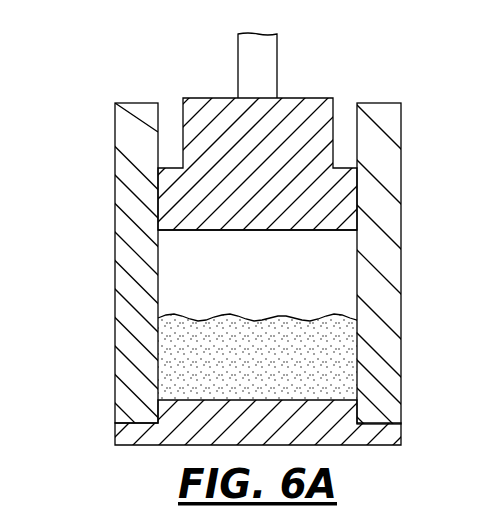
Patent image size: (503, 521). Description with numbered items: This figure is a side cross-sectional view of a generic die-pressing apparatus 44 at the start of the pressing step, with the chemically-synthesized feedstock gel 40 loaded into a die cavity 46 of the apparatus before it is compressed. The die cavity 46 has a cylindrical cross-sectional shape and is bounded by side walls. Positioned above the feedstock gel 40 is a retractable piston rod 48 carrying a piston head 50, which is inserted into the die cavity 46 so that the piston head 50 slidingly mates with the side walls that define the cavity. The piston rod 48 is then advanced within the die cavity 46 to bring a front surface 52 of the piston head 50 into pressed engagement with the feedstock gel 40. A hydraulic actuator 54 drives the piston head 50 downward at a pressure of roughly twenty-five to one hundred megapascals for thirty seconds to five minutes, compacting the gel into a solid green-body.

The feedstock gel 40 is at (233, 320).
The die-pressing apparatus 44 is at (265, 271).
The die cavity 46 is at (338, 268).
The retractable piston rod 48 is at (326, 155).
The piston head 50 is at (323, 200).
The front surface 52 is at (272, 233).
The hydraulic actuator 54 is at (270, 57).